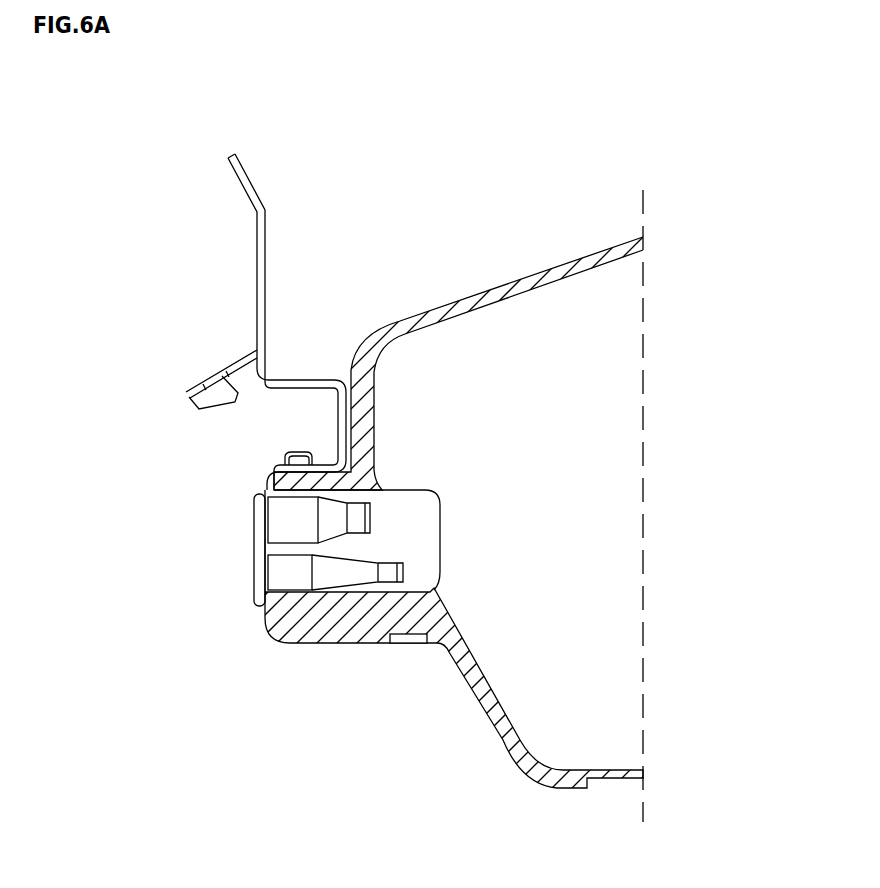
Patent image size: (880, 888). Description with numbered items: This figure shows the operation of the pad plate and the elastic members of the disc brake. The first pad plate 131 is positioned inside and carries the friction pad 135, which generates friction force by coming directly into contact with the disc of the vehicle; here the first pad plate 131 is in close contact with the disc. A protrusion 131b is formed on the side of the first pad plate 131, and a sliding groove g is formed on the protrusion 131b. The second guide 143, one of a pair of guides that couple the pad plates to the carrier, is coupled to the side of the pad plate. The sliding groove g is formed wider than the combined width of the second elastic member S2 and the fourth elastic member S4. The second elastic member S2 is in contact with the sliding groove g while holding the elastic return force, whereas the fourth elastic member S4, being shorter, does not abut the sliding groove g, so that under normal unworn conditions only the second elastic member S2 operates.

The first pad plate 131 is at (527, 272).
The protrusion 131b is at (337, 618).
The friction pad 135 is at (610, 468).
The second guide 143 is at (260, 230).
The second elastic member S2 is at (285, 511).
The fourth elastic member S4 is at (280, 560).
The sliding groove g is at (410, 548).